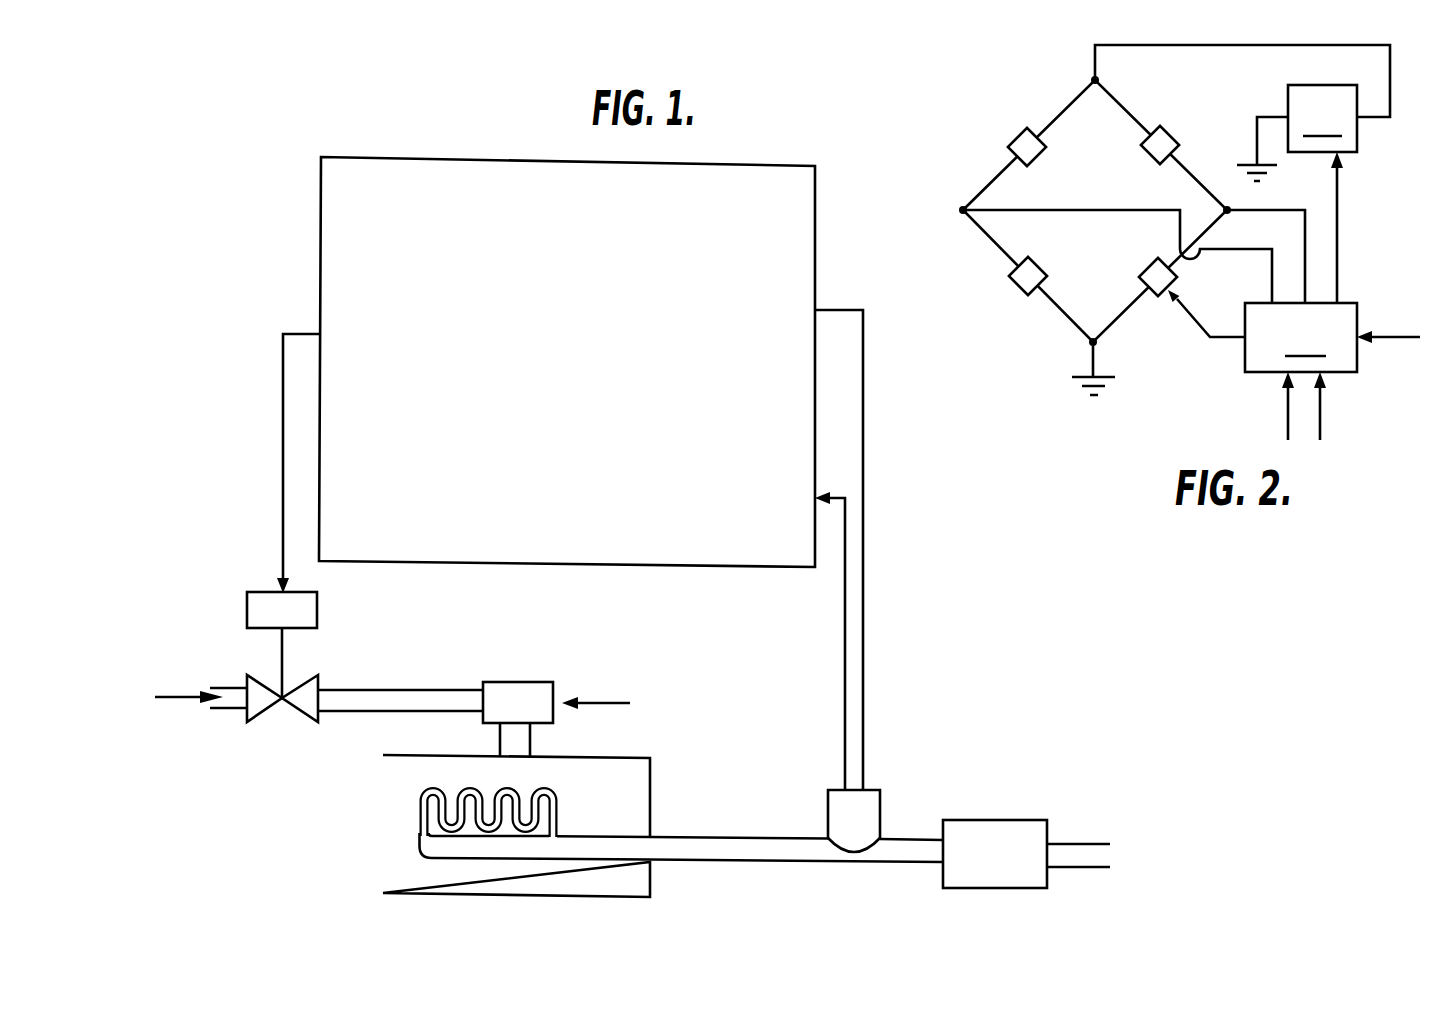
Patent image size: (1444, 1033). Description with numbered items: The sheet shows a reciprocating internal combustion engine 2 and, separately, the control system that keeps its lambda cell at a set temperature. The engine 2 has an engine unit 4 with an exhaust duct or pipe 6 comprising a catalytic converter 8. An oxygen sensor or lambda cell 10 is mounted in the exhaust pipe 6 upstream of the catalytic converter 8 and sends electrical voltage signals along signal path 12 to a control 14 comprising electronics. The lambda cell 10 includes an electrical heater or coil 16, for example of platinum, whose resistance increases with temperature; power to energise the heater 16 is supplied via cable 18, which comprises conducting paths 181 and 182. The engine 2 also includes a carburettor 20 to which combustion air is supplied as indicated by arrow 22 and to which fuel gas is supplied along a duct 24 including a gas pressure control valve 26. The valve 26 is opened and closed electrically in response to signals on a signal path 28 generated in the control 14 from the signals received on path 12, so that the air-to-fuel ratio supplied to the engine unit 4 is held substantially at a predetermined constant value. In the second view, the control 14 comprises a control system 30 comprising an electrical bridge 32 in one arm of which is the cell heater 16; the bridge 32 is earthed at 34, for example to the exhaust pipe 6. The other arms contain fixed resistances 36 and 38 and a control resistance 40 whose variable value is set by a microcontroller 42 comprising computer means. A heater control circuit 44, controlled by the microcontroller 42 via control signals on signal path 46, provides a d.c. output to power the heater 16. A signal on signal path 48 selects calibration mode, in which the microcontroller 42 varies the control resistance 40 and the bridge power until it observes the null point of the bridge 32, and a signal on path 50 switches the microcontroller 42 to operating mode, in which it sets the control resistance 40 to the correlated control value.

In FIG. 1, the reciprocating internal combustion engine 2 is at (496, 809).
In FIG. 1, the engine unit 4 is at (636, 758).
In FIG. 1, the exhaust duct or pipe 6 is at (725, 846).
In FIG. 1, the catalytic converter 8 is at (1010, 828).
In FIG. 1, the oxygen sensor or lambda cell 10 is at (840, 800).
In FIG. 1, the signal path 12 is at (845, 624).
In FIG. 2, the signal path 12 is at (1390, 337).
In FIG. 1, the control 14 is at (734, 164).
In FIG. 2, the electrical heater or coil 16 is at (1016, 286).
In FIG. 1, the cable 18 is at (866, 627).
In FIG. 1, the carburettor 20 is at (502, 682).
In FIG. 1, the arrow 22 is at (608, 703).
In FIG. 1, the duct 24 is at (355, 704).
In FIG. 1, the gas pressure control valve 26 is at (322, 650).
In FIG. 1, the signal path 28 is at (283, 388).
In FIG. 2, the control system 30 is at (1362, 199).
In FIG. 2, the electrical bridge 32 is at (1071, 211).
In FIG. 2, the ground connection 34 is at (1090, 372).
In FIG. 2, the fixed resistance 36 is at (1020, 136).
In FIG. 2, the fixed resistance 38 is at (1165, 136).
In FIG. 2, the control resistance 40 is at (1152, 270).
In FIG. 2, the microcontroller 42 is at (1262, 331).
In FIG. 2, the heater control circuit 44 is at (1242, 113).
In FIG. 2, the signal path 46 is at (1340, 232).
In FIG. 2, the signal path 48 is at (1285, 416).
In FIG. 2, the signal path 50 is at (1323, 416).
In FIG. 2, the conducting path 181 is at (985, 235).
In FIG. 2, the conducting path 182 is at (1124, 318).